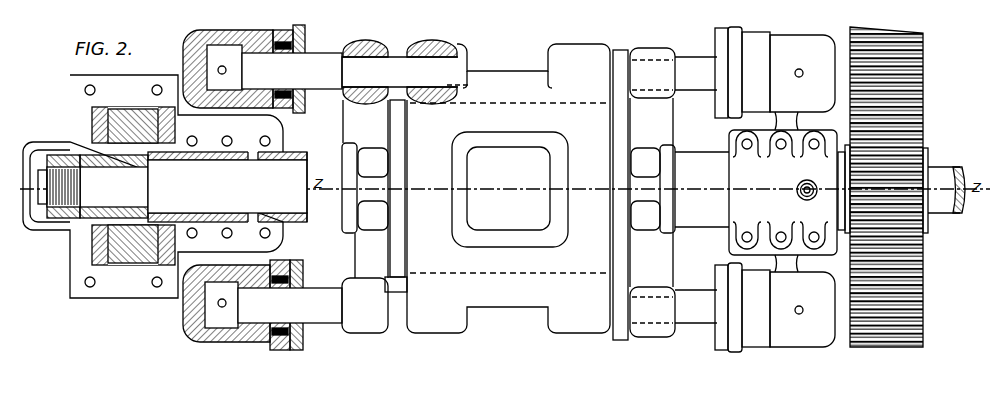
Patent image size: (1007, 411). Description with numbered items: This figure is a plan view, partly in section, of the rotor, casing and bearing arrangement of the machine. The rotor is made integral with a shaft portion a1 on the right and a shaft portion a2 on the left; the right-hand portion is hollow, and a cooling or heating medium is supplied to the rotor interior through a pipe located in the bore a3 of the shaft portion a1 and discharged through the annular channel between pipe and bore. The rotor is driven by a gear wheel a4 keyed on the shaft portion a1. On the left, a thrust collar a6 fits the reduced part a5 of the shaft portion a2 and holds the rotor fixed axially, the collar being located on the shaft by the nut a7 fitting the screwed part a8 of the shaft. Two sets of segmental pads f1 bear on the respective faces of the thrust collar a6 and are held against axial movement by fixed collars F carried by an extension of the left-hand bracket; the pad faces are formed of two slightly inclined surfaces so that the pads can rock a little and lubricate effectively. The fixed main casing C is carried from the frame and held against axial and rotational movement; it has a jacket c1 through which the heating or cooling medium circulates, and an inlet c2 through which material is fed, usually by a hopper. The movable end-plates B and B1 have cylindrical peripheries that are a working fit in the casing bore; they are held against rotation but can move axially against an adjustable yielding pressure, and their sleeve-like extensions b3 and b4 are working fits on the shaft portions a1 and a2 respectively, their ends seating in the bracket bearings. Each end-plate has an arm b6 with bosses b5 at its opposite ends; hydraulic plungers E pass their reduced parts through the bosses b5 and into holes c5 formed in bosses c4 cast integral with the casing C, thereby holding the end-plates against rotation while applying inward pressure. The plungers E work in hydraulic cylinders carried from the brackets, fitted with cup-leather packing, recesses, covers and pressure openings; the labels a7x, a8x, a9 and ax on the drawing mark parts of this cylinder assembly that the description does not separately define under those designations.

The shaft portion a1 is at (793, 118).
The shaft portion a2 is at (300, 158).
The bore a3 is at (965, 175).
The gear wheel a4 is at (915, 113).
The reduced part a5 is at (218, 253).
The thrust collar a6 is at (130, 110).
The nut a7 is at (222, 55).
The mounting plate a7x is at (160, 62).
The screwed part a8 is at (58, 160).
The lock nut a8x is at (298, 30).
The ball bearing ring a9 is at (300, 42).
The pin hole ax is at (223, 75).
The movable end-plate B is at (618, 246).
The movable end-plate B1 is at (392, 118).
The sleeve-like extension b3 is at (692, 162).
The sleeve-like extension b4 is at (333, 224).
The boss b5 is at (373, 48).
The arm b6 is at (383, 138).
The main casing C is at (497, 80).
The jacket c1 is at (394, 66).
The inlet c2 is at (342, 70).
The boss c4 is at (462, 50).
The hole c5 is at (430, 48).
The hydraulic plunger E is at (327, 82).
The fixed collar F is at (92, 110).
The segmental pad f1 is at (108, 125).